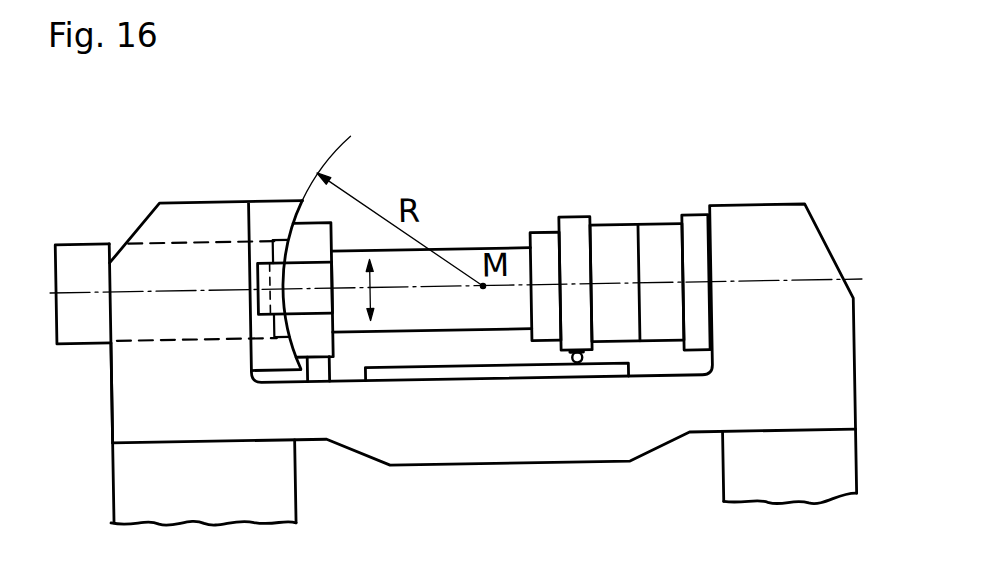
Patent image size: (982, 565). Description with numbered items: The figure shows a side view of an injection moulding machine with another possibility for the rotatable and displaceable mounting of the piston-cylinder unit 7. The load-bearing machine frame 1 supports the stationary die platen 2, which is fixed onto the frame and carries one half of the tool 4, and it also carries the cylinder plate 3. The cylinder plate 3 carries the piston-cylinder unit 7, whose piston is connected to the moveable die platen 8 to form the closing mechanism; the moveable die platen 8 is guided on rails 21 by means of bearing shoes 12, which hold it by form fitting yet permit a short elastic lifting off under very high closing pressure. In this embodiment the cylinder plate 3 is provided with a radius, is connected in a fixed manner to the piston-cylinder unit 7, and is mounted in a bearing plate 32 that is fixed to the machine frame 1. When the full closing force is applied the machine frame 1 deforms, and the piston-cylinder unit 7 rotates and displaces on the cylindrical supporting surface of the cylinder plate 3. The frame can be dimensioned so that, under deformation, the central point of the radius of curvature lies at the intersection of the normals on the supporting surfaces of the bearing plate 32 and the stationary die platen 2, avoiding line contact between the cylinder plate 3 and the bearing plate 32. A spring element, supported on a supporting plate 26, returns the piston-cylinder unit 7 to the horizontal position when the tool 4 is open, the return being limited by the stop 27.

The machine frame 1 is at (128, 396).
The stationary die platen 2 is at (693, 236).
The cylinder plate 3 is at (319, 243).
The tool 4 is at (658, 250).
The piston-cylinder unit 7 is at (88, 264).
The moveable die platen 8 is at (576, 240).
The bearing shoe 12 is at (578, 364).
The rail 21 is at (497, 369).
The supporting plate 26 is at (312, 296).
The stop 27 is at (316, 371).
The bearing plate 32 is at (268, 219).